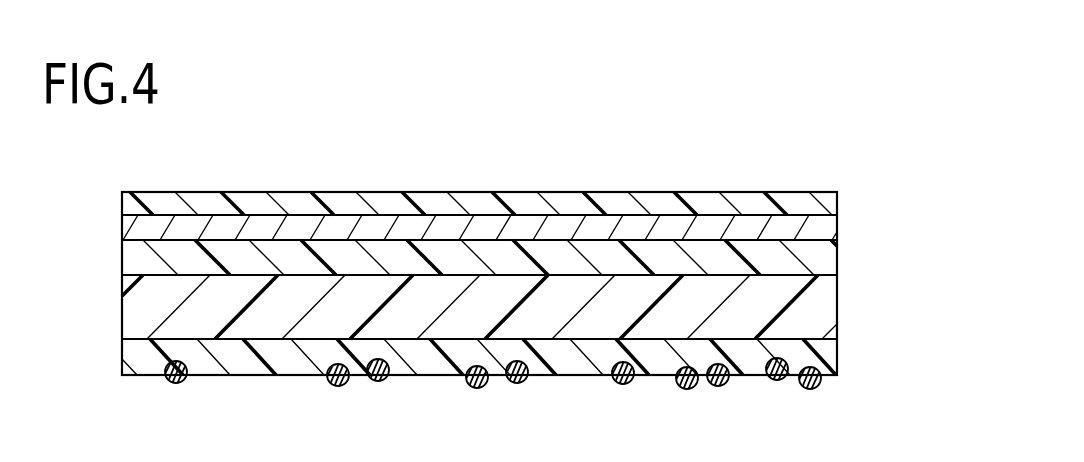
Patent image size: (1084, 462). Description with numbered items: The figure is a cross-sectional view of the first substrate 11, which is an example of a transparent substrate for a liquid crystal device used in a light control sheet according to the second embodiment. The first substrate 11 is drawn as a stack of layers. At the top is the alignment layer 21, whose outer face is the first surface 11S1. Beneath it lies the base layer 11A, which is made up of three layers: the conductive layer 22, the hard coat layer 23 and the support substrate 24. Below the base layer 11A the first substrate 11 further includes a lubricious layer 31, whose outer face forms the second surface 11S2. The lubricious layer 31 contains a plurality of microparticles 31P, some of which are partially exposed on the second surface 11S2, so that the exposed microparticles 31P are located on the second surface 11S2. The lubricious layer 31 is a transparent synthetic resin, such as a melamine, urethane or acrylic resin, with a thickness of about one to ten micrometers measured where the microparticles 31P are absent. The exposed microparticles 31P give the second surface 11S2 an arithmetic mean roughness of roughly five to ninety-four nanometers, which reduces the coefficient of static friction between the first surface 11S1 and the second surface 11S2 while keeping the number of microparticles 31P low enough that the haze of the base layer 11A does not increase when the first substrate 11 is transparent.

The first substrate 11 is at (796, 168).
The first surface 11S1 is at (432, 191).
The second surface 11S2 is at (430, 377).
The base layer 11A is at (541, 330).
The alignment layer 21 is at (840, 199).
The conductive layer 22 is at (840, 228).
The hard coat layer 23 is at (840, 256).
The support substrate 24 is at (840, 302).
The lubricious layer 31 is at (840, 357).
The microparticles 31P is at (338, 386).